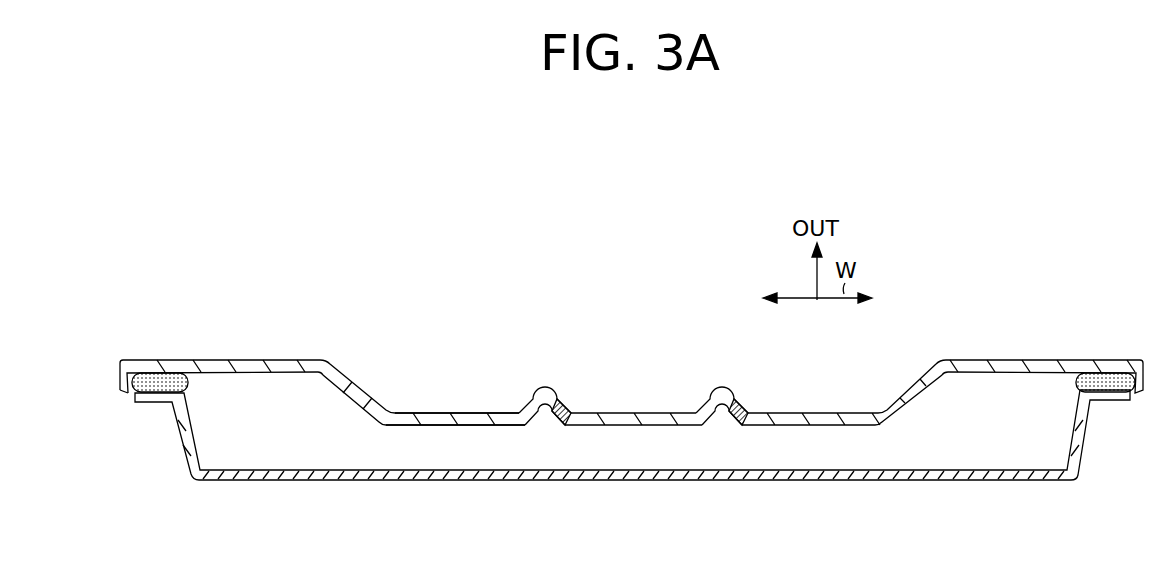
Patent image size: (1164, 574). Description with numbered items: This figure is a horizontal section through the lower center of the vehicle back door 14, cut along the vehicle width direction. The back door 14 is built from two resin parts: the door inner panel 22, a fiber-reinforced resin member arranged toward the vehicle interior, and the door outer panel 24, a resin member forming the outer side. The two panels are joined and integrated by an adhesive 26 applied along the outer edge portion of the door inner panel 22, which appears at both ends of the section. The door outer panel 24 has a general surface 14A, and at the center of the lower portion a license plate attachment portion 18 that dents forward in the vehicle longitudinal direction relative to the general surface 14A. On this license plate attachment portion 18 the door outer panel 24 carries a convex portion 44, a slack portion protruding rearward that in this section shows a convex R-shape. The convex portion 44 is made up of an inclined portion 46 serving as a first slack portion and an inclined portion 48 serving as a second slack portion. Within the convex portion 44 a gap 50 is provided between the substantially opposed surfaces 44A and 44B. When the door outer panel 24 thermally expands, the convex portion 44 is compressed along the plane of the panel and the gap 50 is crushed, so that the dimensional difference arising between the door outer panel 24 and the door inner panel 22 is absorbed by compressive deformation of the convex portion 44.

The back door 14 is at (631, 350).
The general surface 14A is at (1047, 358).
The license plate attachment portion 18 is at (850, 417).
The door inner panel 22 is at (909, 490).
The door outer panel 24 is at (975, 354).
The adhesive 26 is at (138, 396).
The convex portion 44 is at (723, 369).
The opposed surface 44A is at (523, 402).
The opposed surface 44B is at (563, 402).
The inclined portion 46 is at (540, 395).
The inclined portion 48 is at (730, 397).
The gap 50 is at (540, 410).